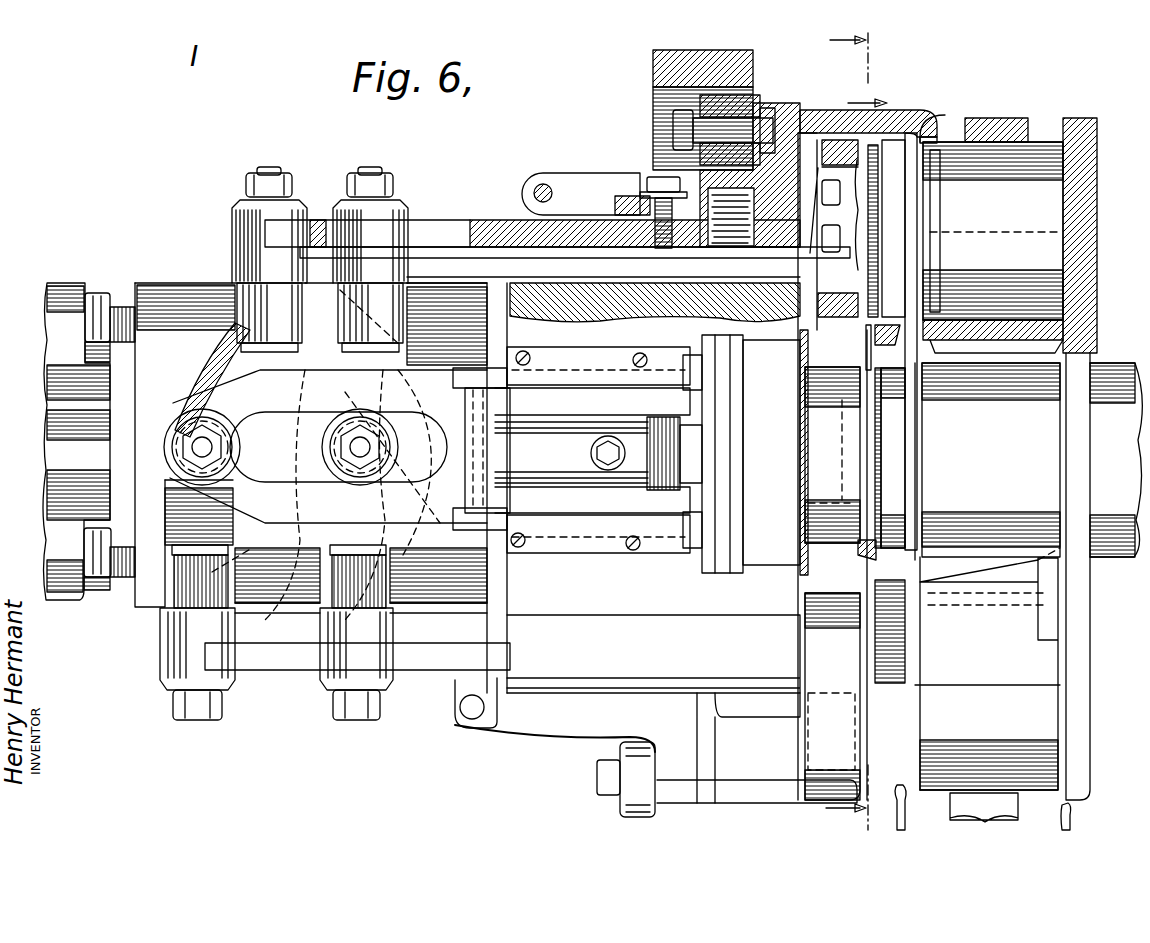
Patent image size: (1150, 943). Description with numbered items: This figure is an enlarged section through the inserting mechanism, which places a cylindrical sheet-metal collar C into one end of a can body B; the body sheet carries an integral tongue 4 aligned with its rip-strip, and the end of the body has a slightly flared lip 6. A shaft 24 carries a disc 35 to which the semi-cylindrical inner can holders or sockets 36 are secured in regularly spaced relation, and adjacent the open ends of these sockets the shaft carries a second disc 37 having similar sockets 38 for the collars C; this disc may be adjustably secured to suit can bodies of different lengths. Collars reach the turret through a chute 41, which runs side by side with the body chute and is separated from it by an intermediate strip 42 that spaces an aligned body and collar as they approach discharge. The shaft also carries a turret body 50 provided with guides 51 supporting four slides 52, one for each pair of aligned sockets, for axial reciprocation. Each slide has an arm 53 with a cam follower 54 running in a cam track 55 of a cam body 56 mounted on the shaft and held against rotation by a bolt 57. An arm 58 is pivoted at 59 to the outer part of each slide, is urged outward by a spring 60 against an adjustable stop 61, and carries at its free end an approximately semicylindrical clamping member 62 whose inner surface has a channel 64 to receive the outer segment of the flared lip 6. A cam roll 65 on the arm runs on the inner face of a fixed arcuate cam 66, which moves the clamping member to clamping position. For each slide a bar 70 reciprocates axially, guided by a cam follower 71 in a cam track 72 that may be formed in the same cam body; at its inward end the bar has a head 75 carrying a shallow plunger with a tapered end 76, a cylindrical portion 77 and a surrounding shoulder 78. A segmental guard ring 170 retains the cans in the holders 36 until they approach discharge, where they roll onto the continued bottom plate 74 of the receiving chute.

The tongue 4 is at (856, 431).
The body lip 6 is at (938, 124).
The shaft 24 is at (1128, 372).
The disc 35 is at (1097, 230).
The inner can holders or sockets 36 is at (1020, 328).
The disc 37 is at (878, 336).
The sockets 38 is at (886, 358).
The chute 41 is at (860, 549).
The intermediate strip 42 is at (912, 522).
The turret body 50 is at (655, 312).
The guides 51 is at (565, 348).
The slides 52 is at (503, 222).
The arm 53 is at (433, 227).
The cam follower 54 is at (248, 302).
The cam track 55 is at (185, 364).
The cam body 56 is at (171, 290).
The bolt 57 is at (118, 305).
The arm 58 is at (610, 176).
The pivot 59 is at (545, 183).
The spring 60 is at (708, 246).
The adjustable stop 61 is at (650, 190).
The clamping member 62 is at (902, 112).
The channel 64 is at (916, 125).
The cam roll 65 is at (720, 96).
The arcuate cam 66 is at (660, 65).
The bar 70 is at (575, 264).
The cam follower 71 is at (368, 302).
The cam track 72 is at (336, 562).
The bottom plate continuation 74 is at (1000, 812).
The head 75 is at (828, 150).
The tapered end 76 is at (878, 186).
The cylindrical portion 77 is at (878, 165).
The shoulder 78 is at (868, 142).
The segmental guard ring 170 is at (1001, 118).
The can body B is at (1037, 135).
The collar C is at (890, 411).